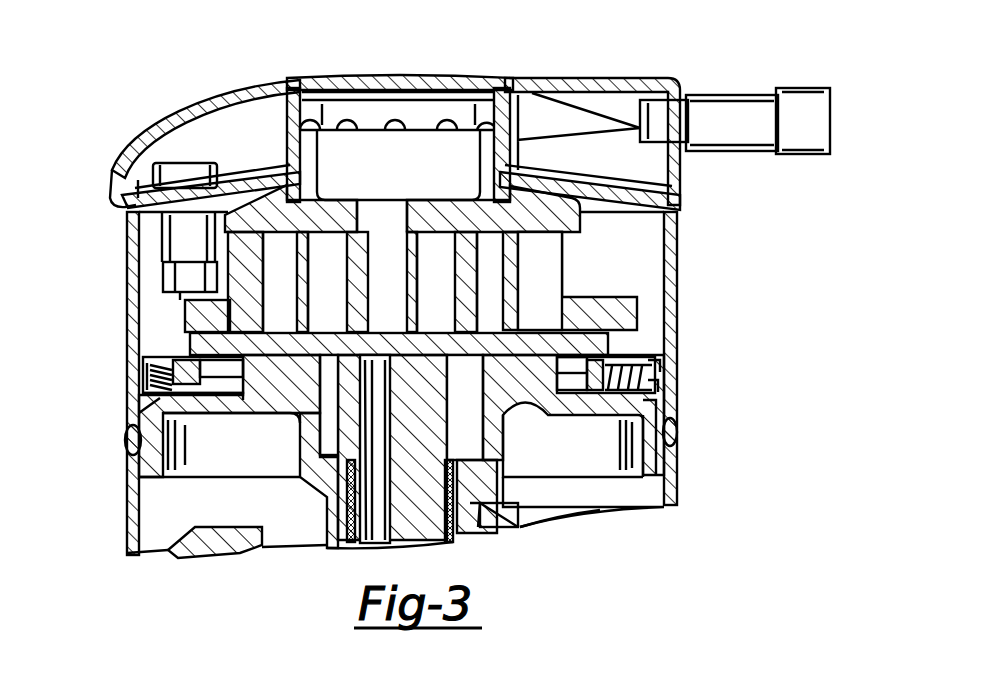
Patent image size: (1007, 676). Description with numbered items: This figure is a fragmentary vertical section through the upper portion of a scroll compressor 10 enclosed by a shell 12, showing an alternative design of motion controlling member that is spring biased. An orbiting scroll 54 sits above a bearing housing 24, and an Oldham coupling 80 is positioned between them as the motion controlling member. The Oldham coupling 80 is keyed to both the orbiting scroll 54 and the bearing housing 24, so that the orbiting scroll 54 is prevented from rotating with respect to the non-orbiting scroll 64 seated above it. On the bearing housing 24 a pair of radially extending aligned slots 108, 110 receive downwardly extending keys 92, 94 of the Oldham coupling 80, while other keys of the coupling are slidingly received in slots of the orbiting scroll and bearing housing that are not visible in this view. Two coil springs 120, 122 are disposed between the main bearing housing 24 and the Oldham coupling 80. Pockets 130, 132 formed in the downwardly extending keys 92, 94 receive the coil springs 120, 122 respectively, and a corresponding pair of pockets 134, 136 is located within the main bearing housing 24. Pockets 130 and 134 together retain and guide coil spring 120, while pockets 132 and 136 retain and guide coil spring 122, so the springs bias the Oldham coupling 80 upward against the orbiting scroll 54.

The compressor 10 is at (645, 8).
The shell 12 is at (127, 337).
The bearing housing 24 is at (650, 413).
The orbiting scroll 54 is at (136, 322).
The non-orbiting scroll 64 is at (622, 290).
The Oldham coupling 80 is at (640, 340).
The key 92 is at (143, 358).
The key 94 is at (645, 352).
The slot 108 is at (573, 380).
The slot 110 is at (127, 437).
The coil spring 120 is at (145, 388).
The coil spring 122 is at (648, 385).
The pocket 130 is at (143, 408).
The pocket 132 is at (587, 380).
The pocket 134 is at (147, 373).
The pocket 136 is at (668, 397).